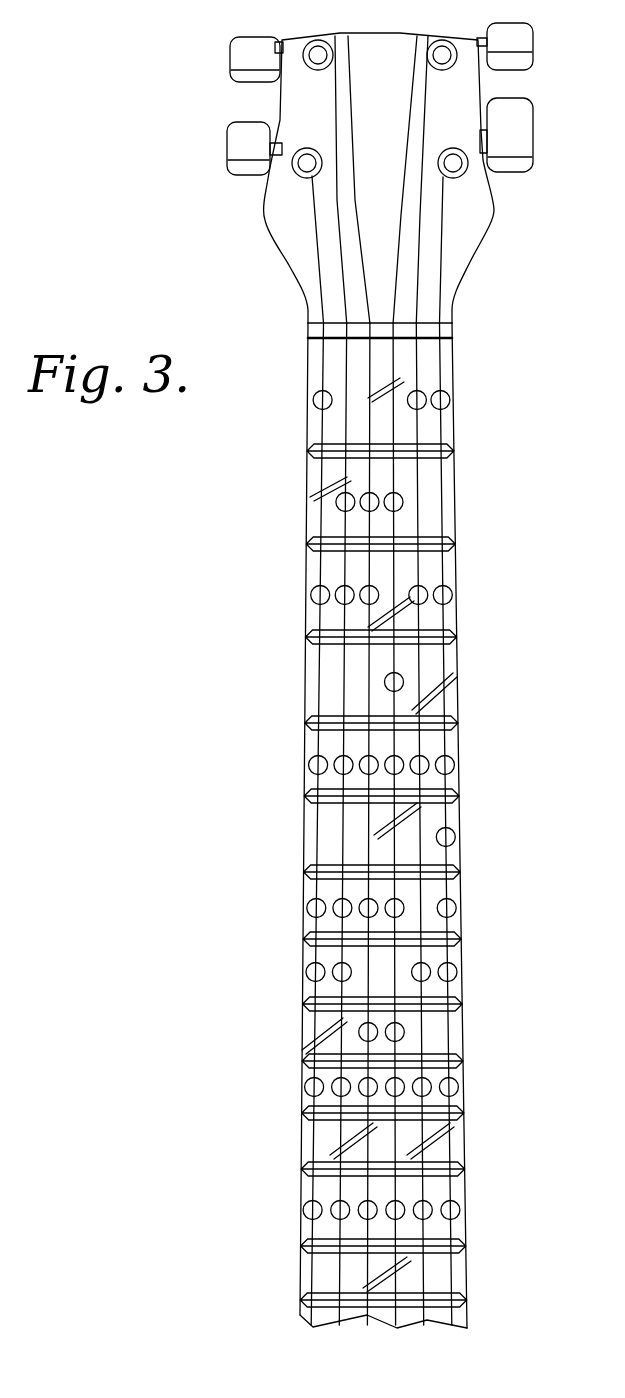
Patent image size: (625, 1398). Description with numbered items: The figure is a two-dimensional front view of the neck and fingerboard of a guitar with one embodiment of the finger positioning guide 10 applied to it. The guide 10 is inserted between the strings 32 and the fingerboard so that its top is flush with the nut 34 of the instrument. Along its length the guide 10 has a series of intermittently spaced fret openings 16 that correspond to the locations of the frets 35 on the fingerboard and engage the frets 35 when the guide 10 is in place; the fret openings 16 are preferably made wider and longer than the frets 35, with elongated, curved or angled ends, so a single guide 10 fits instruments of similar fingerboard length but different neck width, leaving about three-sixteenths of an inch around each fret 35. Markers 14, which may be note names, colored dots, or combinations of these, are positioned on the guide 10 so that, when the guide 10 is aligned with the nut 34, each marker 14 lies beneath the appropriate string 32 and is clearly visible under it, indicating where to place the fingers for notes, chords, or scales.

The finger positioning guide 10 is at (409, 675).
The marker 14 is at (310, 595).
The fret opening 16 is at (333, 450).
The string 32 is at (315, 507).
The nut 34 is at (452, 323).
The fret 35 is at (432, 797).